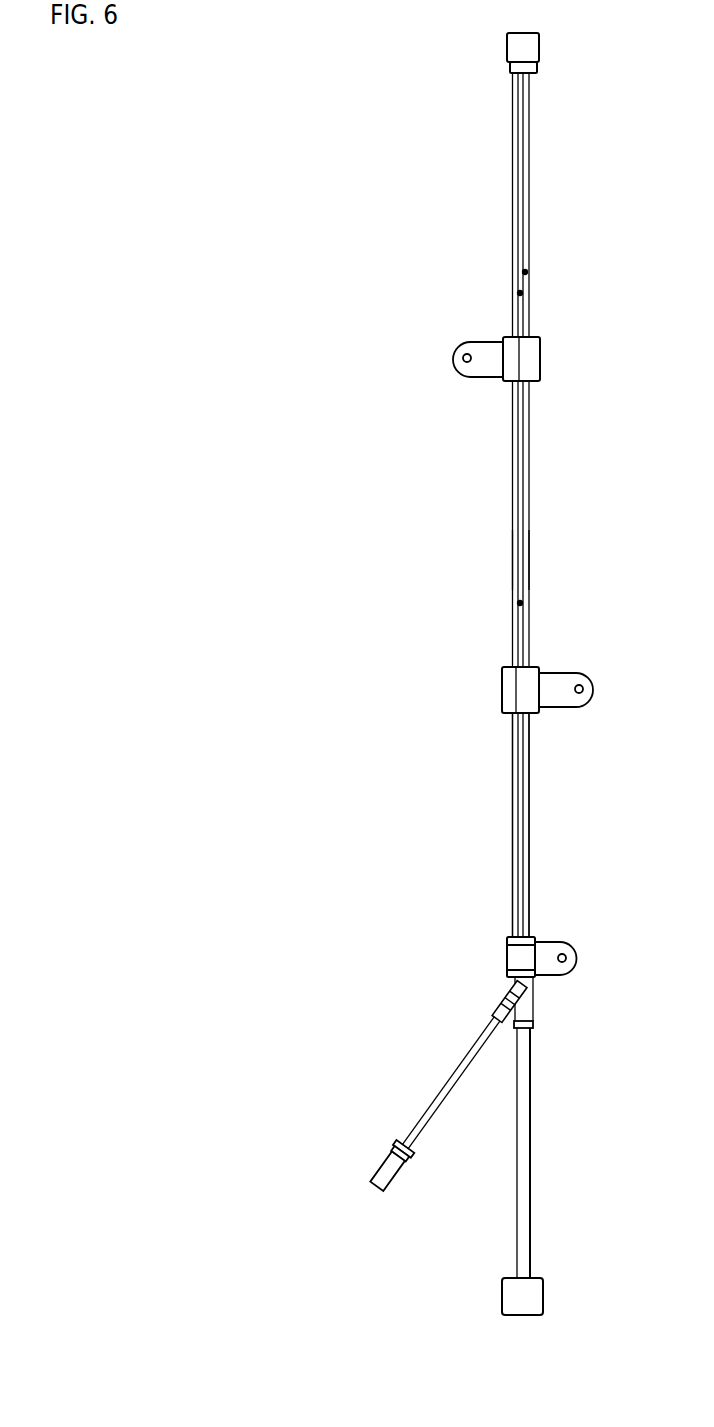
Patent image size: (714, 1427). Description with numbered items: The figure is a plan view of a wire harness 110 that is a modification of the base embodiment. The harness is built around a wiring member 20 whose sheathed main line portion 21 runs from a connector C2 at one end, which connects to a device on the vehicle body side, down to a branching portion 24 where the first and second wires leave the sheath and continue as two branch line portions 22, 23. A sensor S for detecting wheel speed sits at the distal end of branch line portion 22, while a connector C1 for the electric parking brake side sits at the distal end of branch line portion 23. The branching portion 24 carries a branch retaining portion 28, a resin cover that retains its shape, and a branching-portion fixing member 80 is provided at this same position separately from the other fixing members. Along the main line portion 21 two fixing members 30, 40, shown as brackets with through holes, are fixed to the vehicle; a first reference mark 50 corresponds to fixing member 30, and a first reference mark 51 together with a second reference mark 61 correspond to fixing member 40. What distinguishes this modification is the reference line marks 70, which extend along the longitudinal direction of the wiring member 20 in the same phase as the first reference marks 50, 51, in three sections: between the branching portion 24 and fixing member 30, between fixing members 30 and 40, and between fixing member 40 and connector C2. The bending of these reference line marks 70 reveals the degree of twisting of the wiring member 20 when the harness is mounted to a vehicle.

The wire harness 110 is at (312, 183).
The wiring member 20 is at (534, 557).
The main line portion 21 is at (529, 880).
The branch line portion 22 is at (443, 1090).
The branch line portion 23 is at (525, 1137).
The branching portion 24 is at (490, 997).
The branch retaining portion 28 is at (534, 1026).
The fixing member 30 is at (571, 716).
The fixing member 40 is at (475, 388).
The first reference mark 50 is at (522, 604).
The first reference mark 51 is at (522, 294).
The second reference mark 61 is at (527, 273).
The reference line mark 70 is at (523, 214).
The branching-portion fixing member 80 is at (557, 981).
The connector C1 is at (543, 1297).
The connector C2 is at (539, 47).
The sensor S is at (392, 1176).